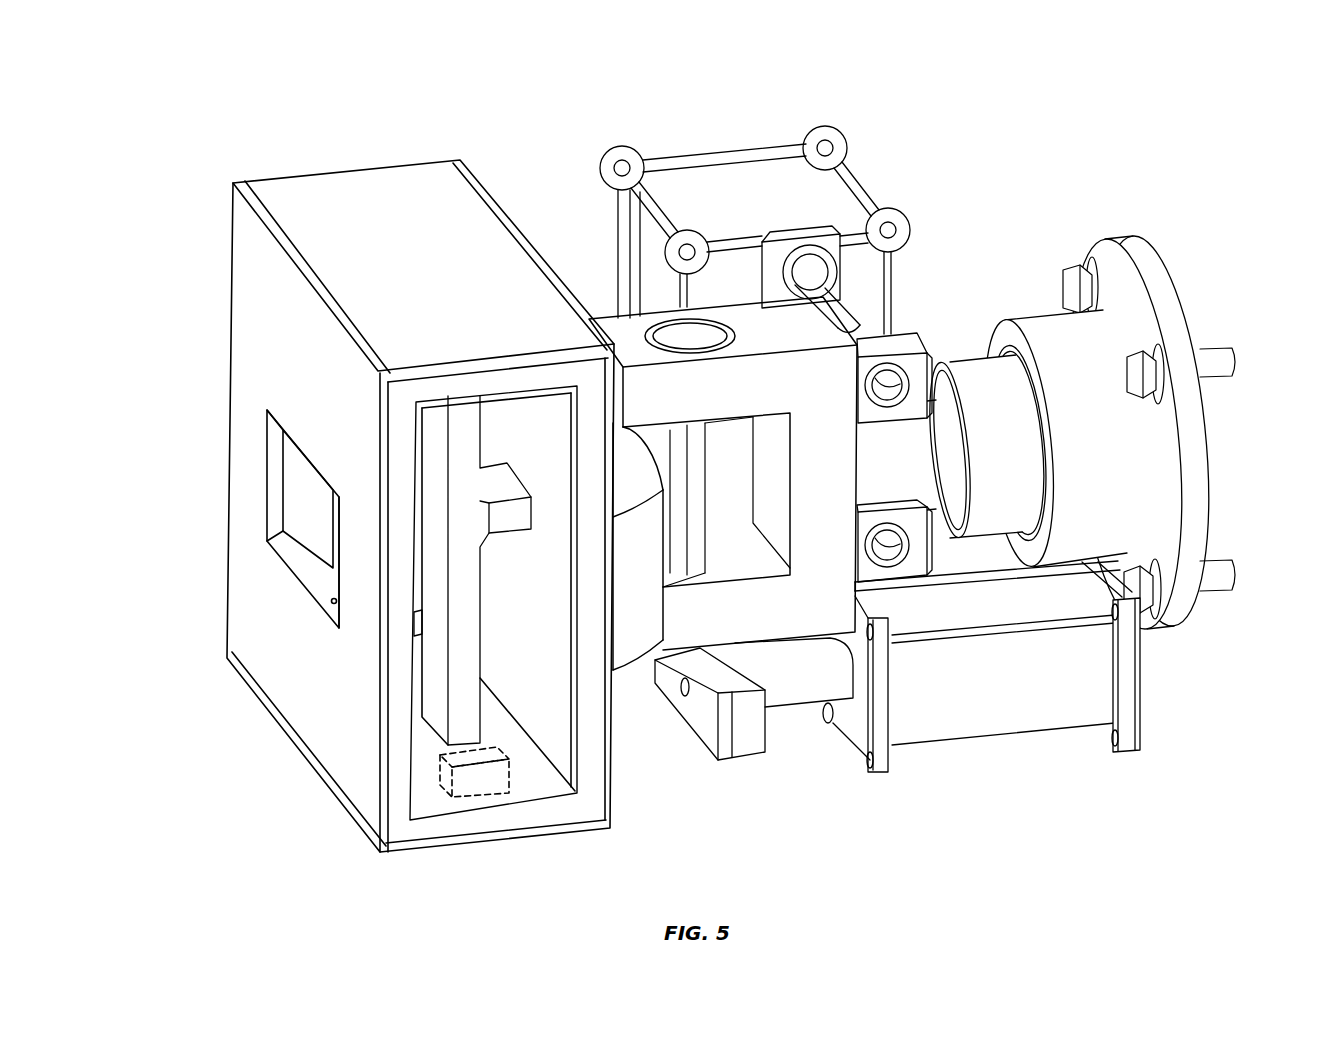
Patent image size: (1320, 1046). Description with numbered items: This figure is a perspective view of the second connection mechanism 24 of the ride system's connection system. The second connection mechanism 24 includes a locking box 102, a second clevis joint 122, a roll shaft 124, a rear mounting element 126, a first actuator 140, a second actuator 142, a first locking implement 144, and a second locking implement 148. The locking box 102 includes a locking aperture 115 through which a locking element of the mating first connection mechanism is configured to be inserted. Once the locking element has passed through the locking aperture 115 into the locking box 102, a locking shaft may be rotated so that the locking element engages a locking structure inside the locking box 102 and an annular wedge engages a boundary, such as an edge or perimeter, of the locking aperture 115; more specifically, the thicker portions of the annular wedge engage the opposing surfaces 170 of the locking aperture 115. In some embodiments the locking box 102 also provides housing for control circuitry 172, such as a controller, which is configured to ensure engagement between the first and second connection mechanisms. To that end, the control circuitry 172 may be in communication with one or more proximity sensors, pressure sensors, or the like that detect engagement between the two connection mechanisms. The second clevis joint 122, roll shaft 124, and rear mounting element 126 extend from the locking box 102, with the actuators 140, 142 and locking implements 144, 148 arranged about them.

The second connection mechanism 24 is at (858, 86).
The locking box 102 is at (389, 504).
The locking aperture 115 is at (311, 586).
The second clevis joint 122 is at (598, 302).
The roll shaft 124 is at (908, 433).
The rear mounting element 126 is at (1119, 235).
The first actuator 140 is at (1002, 717).
The second actuator 142 is at (828, 196).
The first locking implement 144 is at (747, 757).
The second locking implement 148 is at (836, 252).
The opposing surfaces 170 is at (327, 578).
The control circuitry 172 is at (491, 791).